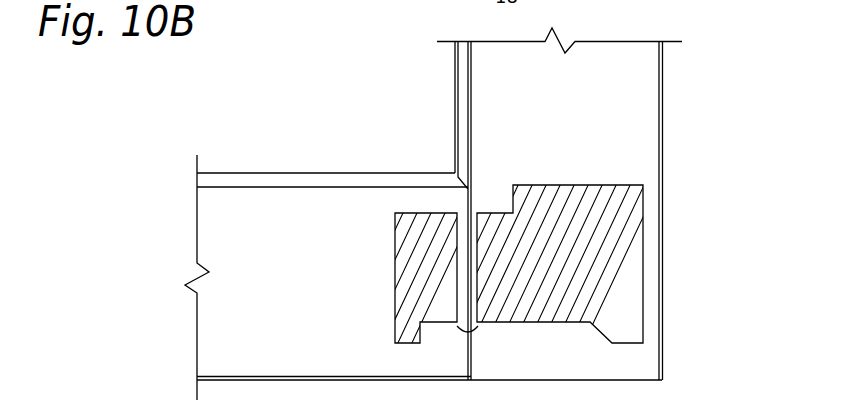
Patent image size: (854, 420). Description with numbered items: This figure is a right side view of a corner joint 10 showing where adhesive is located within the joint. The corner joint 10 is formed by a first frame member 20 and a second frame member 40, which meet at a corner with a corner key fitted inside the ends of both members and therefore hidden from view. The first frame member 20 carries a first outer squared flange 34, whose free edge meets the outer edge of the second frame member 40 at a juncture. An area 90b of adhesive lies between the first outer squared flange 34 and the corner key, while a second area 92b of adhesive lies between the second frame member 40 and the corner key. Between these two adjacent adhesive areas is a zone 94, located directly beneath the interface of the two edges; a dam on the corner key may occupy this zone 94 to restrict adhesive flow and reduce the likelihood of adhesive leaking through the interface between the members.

The corner joint 10 is at (336, 112).
The first frame member 20 is at (645, 95).
The second frame member 40 is at (303, 357).
The first outer squared flange 34 is at (618, 372).
The second area of adhesive 92b is at (402, 345).
The area of adhesive 90b is at (645, 236).
The zone between adjacent adhesive areas 94 is at (462, 363).